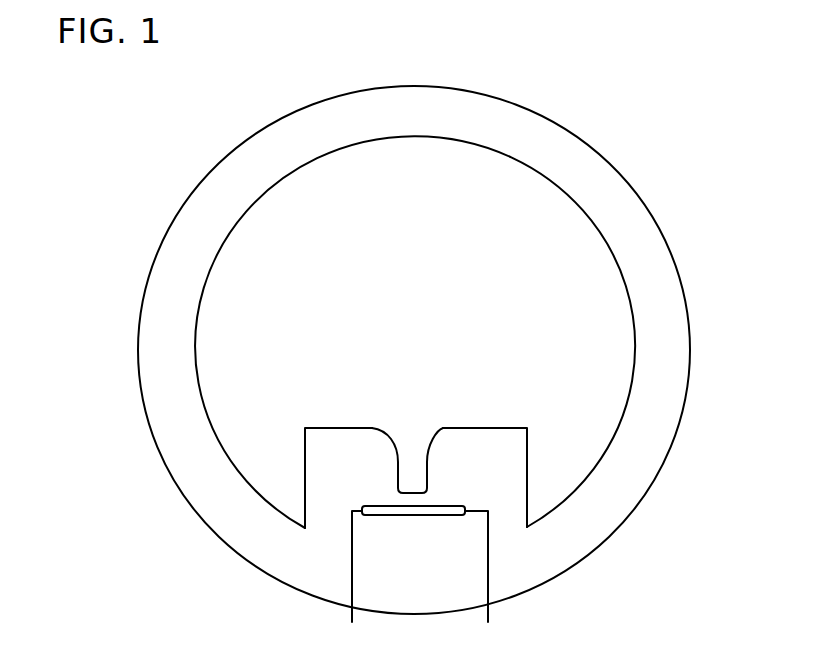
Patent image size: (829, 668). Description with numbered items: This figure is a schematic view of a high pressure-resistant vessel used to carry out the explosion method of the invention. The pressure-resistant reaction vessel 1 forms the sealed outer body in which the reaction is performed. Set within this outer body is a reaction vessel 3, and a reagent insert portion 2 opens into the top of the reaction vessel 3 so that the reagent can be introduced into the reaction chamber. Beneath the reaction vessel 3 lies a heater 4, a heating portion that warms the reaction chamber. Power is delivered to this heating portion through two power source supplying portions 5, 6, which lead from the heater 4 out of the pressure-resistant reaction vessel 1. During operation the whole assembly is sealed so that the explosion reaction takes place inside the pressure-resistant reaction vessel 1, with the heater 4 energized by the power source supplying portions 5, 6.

The pressure-resistant reaction vessel 1 is at (518, 147).
The reagent insert portion 2 is at (403, 440).
The reaction vessel 3 is at (487, 448).
The heater 4 is at (422, 515).
The power source supplying portion 5 is at (352, 583).
The power source supplying portion 6 is at (477, 583).